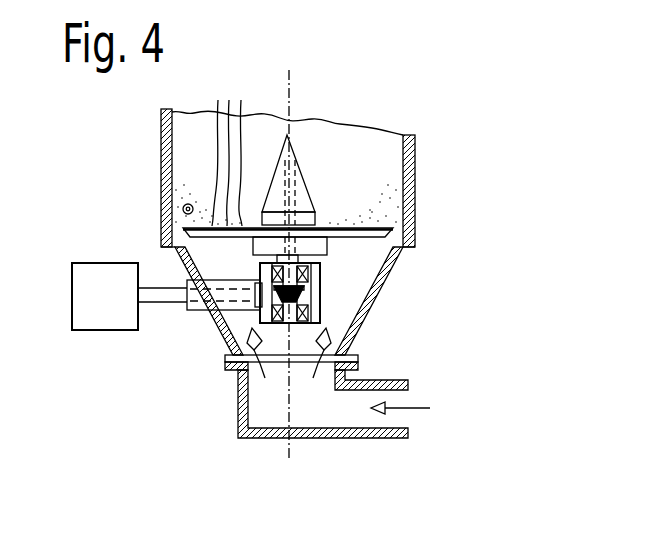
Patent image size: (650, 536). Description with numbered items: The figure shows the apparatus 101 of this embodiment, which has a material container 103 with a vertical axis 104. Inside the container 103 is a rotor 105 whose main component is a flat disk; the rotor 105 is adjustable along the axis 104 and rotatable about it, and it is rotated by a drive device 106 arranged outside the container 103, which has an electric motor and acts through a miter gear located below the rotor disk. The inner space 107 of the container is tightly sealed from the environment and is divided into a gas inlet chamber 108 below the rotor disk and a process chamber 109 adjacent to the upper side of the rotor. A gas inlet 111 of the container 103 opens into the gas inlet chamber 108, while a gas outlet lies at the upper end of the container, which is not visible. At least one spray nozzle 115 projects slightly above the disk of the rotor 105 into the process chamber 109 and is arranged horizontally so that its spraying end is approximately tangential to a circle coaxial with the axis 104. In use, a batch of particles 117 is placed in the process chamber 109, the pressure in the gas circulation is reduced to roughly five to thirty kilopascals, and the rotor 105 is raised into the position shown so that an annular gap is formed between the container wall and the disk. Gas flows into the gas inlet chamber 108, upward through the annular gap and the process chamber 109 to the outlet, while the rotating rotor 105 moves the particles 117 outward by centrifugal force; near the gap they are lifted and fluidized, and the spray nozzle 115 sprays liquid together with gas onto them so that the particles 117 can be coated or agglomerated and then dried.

The apparatus 101 is at (148, 126).
The material container 103 is at (160, 152).
The vertical axis 104 is at (290, 92).
The rotor 105 is at (385, 276).
The drive device 106 is at (82, 262).
The inner space 107 is at (360, 333).
The gas inlet chamber 108 is at (355, 290).
The process chamber 109 is at (348, 160).
The gas inlet 111 is at (272, 365).
The spray nozzle 115 is at (162, 207).
The particles 117 is at (227, 150).